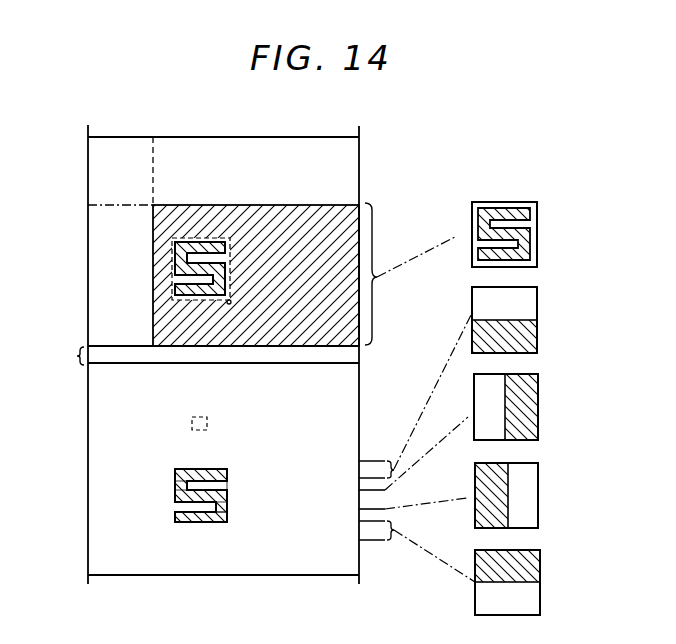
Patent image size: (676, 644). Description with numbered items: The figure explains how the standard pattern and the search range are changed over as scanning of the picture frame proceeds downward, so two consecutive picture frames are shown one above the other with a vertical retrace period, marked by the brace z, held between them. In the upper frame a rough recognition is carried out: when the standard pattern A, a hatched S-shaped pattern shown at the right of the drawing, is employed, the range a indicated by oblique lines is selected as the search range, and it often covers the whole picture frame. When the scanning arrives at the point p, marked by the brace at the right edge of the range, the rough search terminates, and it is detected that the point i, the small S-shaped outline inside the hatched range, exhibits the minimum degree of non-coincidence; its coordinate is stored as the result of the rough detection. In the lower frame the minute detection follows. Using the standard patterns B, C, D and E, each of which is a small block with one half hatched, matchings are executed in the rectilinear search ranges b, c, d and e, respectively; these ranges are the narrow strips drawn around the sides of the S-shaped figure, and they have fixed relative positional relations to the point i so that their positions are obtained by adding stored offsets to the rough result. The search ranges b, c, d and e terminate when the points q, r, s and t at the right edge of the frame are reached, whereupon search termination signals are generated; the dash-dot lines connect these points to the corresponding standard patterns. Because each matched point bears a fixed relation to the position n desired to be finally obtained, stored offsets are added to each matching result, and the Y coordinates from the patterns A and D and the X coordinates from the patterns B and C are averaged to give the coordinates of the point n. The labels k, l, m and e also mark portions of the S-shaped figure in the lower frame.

The search range for rough detection a is at (268, 205).
The point of minimum non-coincidence i is at (232, 301).
The search termination point p is at (376, 283).
The gap region z is at (71, 356).
The rectilinear search range b is at (207, 473).
The position to be finally obtained n is at (228, 495).
The right connecting portion l is at (237, 512).
The rectilinear search range d is at (227, 512).
The left stem k is at (175, 481).
The rectilinear search range c is at (181, 491).
The lower bar m is at (208, 529).
The rectilinear search range e is at (208, 522).
The search termination point q is at (367, 473).
The search termination point r is at (363, 490).
The search termination point s is at (363, 509).
The search termination point t is at (368, 537).
The standard pattern A is at (520, 234).
The standard pattern B is at (520, 320).
The standard pattern C is at (520, 407).
The standard pattern D is at (523, 495).
The standard pattern E is at (522, 582).